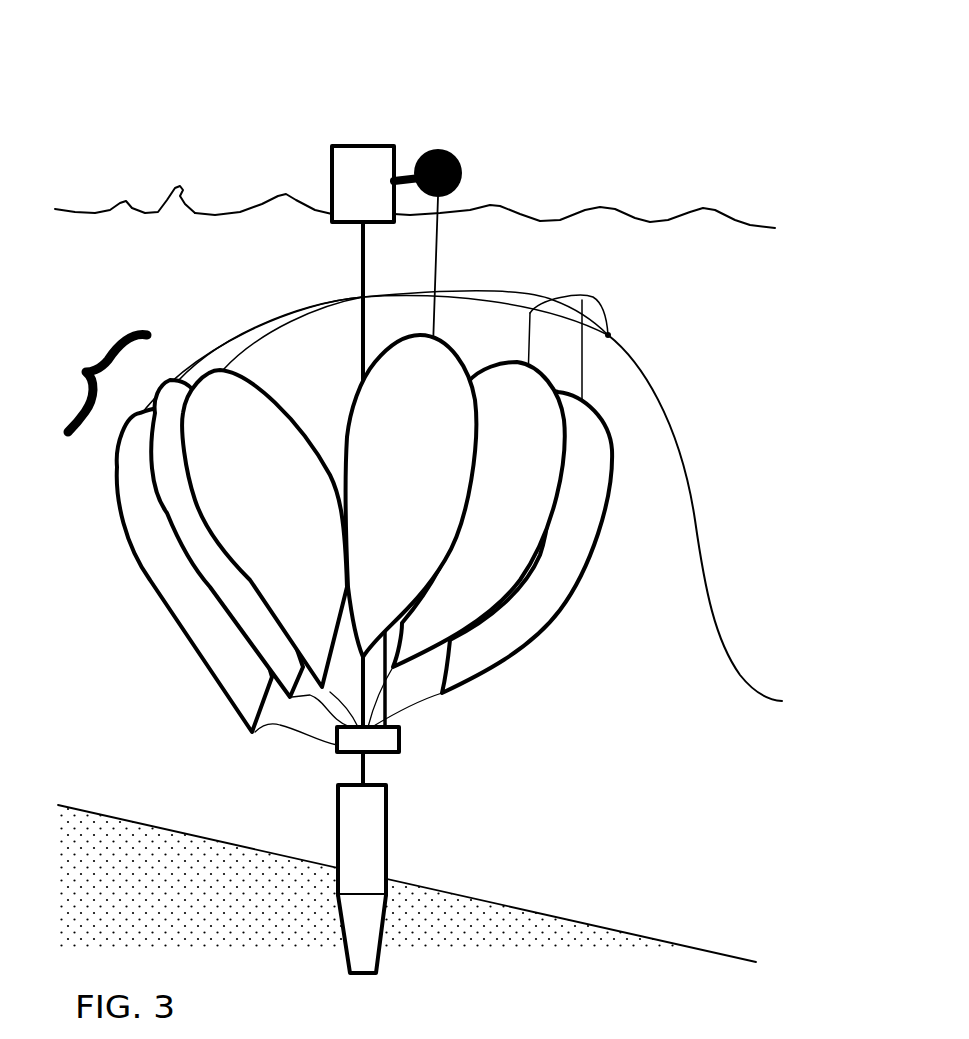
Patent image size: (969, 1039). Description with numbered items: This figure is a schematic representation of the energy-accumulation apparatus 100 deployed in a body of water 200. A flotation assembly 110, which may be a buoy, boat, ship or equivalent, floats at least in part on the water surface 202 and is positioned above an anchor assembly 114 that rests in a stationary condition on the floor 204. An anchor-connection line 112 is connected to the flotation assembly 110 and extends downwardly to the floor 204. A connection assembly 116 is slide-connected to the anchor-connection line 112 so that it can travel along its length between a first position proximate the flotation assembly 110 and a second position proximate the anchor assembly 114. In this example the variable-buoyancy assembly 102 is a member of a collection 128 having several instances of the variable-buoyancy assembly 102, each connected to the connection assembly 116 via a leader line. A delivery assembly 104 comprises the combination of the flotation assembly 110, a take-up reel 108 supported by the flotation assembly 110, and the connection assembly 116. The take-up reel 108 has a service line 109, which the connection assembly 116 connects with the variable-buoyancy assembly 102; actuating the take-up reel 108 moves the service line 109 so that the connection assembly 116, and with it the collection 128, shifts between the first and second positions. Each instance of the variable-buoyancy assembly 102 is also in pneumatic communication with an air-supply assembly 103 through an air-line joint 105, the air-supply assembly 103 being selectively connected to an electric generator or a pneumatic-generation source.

The energy-accumulation apparatus 100 is at (65, 289).
The variable-buoyancy assembly 102 is at (217, 510).
The air-supply assembly 103 is at (707, 590).
The delivery assembly 104 is at (425, 75).
The air-line joint 105 is at (608, 335).
The take-up reel 108 is at (456, 154).
The service line 109 is at (436, 246).
The flotation assembly 110 is at (364, 147).
The anchor-connection line 112 is at (362, 266).
The anchor assembly 114 is at (387, 840).
The connection assembly 116 is at (400, 742).
The collection 128 is at (84, 372).
The body of water 200 is at (717, 250).
The water surface 202 is at (95, 210).
The floor 204 is at (528, 913).